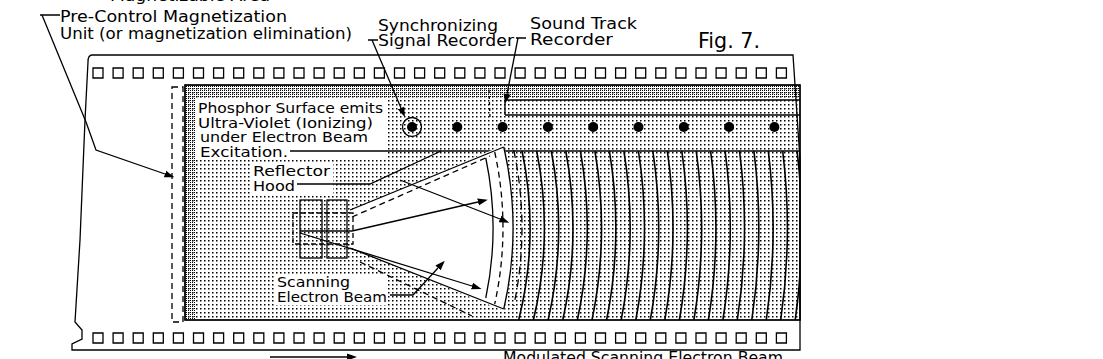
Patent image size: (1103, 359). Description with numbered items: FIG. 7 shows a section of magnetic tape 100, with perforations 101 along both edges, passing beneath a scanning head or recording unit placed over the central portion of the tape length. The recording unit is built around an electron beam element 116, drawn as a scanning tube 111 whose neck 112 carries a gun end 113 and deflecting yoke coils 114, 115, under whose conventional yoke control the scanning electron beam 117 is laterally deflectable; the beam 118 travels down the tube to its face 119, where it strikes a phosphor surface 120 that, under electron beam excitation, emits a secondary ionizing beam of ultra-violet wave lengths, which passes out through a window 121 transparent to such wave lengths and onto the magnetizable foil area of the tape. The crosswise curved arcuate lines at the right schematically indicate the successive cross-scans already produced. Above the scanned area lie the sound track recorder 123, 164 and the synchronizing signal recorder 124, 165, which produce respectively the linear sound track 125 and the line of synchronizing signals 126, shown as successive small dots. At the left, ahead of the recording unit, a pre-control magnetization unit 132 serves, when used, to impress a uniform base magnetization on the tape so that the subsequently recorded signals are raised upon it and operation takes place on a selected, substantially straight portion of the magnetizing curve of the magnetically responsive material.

The film strip 100 is at (436, 202).
The sprocket holes 101 is at (278, 70).
The scanning tube 111 is at (402, 200).
The electron gun 112 is at (358, 206).
The tube neck 113 is at (293, 231).
The focusing coil 114 is at (300, 255).
The deflecting coil 115 is at (343, 257).
The electron beam element 116 is at (450, 228).
The scanning electron beam 117 is at (448, 278).
The electron beam axis 118 is at (415, 224).
The tube window 119 is at (494, 233).
The deflected beam 120 is at (480, 191).
The scanned zone boundary 121 is at (509, 228).
The sound track recorder 123 is at (508, 97).
The sound track recorder 164 is at (539, 86).
The synchronizing signal recorder 124 is at (413, 116).
The synchronizing signal recorder 165 is at (430, 107).
The sound track 125 is at (788, 106).
The synchronizing signal marks 126 is at (780, 127).
The pre-control magnetization unit 132 is at (172, 253).